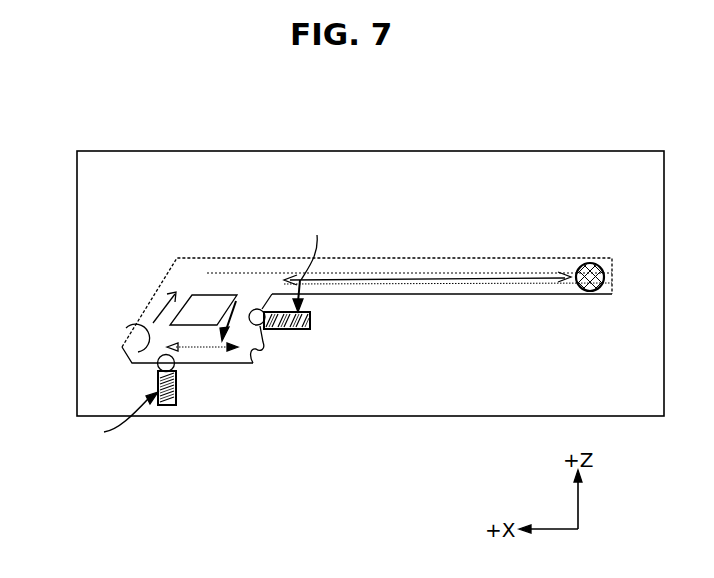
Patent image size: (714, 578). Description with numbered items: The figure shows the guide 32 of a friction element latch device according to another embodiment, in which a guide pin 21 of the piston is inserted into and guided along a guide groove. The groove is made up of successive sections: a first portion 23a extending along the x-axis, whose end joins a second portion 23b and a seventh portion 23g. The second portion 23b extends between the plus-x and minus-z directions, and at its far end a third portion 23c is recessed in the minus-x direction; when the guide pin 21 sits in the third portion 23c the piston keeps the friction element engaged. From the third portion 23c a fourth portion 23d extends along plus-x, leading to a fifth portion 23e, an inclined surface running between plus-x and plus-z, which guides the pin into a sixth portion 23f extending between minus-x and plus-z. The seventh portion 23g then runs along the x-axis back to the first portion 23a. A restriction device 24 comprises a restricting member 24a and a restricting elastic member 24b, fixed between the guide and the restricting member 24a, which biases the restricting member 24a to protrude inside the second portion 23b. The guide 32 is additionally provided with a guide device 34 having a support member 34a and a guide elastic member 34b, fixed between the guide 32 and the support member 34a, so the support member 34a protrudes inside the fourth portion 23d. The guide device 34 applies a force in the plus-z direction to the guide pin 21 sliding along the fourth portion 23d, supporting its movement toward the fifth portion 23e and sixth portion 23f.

The guide pin 21 is at (590, 262).
The first portion 23a is at (438, 268).
The second portion 23b is at (238, 298).
The third portion 23c is at (258, 356).
The fourth portion 23d is at (214, 356).
The fifth portion 23e is at (130, 327).
The sixth portion 23f is at (168, 314).
The seventh portion 23g is at (228, 272).
The restriction device 24 is at (310, 264).
The restricting member 24a is at (253, 311).
The restricting elastic member 24b is at (290, 331).
The guide 32 is at (417, 170).
The guide device 34 is at (116, 420).
The support member 34a is at (158, 364).
The guide elastic member 34b is at (162, 406).